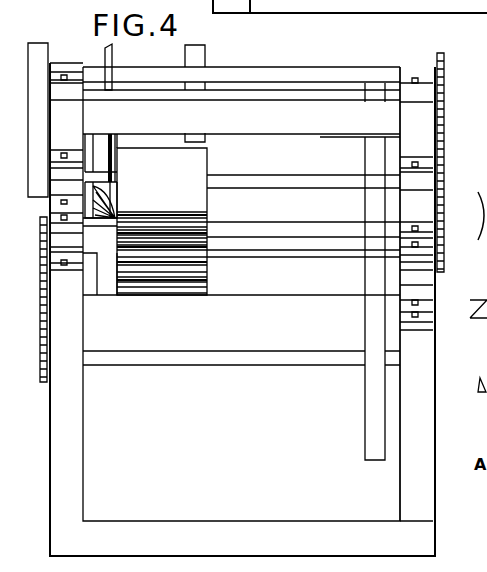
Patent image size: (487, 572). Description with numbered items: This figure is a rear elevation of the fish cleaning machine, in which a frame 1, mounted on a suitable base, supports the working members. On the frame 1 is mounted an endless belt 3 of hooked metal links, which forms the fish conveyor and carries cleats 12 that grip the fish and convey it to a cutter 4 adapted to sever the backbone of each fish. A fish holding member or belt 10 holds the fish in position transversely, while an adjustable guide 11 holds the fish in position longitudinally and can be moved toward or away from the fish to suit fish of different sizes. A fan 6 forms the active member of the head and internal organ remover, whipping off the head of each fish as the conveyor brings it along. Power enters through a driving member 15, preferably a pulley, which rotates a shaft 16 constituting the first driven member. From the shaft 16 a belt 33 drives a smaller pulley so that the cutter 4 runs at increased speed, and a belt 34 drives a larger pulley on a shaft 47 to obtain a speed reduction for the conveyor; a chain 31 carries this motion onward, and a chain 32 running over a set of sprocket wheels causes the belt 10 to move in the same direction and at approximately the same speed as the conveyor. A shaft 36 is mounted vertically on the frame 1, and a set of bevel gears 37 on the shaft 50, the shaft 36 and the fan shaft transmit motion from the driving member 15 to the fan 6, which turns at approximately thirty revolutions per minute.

The frame 1 is at (420, 404).
The endless belt 3 is at (207, 272).
The cutter 4 is at (101, 158).
The fan 6 is at (117, 201).
The fish holding member or belt 10 is at (162, 221).
The guide 11 is at (101, 274).
The cleats 12 is at (207, 237).
The driving member 15 is at (205, 53).
The shaft 16 is at (296, 89).
The chain 31 is at (40, 277).
The chain 32 is at (445, 130).
The belt 33 is at (33, 50).
The belt 34 is at (370, 213).
The shaft 36 is at (241, 119).
The bevel gears 37 is at (112, 57).
The shaft 47 is at (305, 357).
The shaft 50 is at (331, 73).